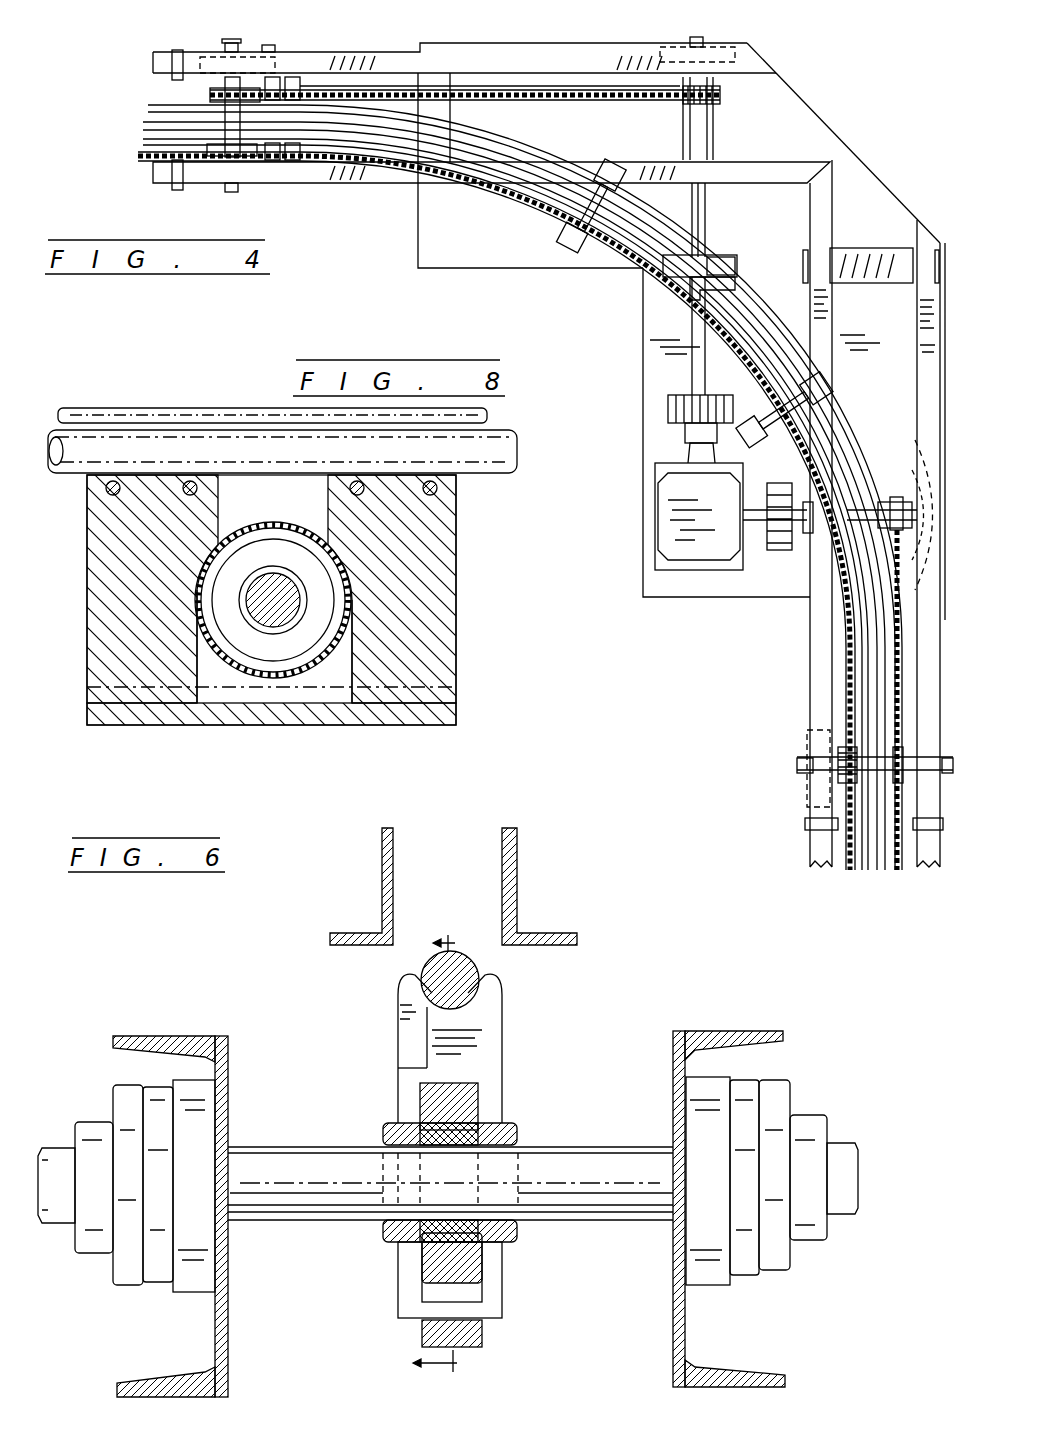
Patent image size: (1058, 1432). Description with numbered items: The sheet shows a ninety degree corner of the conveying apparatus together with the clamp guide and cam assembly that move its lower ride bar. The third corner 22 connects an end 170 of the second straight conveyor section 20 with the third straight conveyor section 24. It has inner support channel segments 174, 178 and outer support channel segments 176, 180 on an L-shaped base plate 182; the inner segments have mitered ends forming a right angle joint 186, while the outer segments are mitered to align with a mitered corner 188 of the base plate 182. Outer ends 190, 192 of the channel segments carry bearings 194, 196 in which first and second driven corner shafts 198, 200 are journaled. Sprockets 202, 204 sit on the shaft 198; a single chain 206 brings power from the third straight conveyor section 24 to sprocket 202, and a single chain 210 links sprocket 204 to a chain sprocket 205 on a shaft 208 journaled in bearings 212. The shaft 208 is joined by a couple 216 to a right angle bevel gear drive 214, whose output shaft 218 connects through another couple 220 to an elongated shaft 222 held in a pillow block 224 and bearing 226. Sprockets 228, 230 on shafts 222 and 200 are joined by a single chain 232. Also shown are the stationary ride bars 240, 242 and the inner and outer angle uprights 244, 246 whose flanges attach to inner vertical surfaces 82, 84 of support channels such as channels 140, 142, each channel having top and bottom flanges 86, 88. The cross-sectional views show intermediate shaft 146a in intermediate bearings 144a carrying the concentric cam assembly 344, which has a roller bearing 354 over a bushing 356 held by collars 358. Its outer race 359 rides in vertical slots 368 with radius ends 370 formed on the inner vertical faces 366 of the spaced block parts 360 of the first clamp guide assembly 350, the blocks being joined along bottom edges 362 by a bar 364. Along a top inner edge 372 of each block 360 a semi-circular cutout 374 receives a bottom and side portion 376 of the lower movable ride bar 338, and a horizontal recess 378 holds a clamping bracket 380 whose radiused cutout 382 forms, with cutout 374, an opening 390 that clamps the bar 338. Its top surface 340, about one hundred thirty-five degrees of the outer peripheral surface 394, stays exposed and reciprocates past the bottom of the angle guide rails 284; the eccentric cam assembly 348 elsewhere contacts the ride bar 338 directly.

In FIG. 4, the second straight conveyor section 20 is at (930, 868).
In FIG. 4, the third corner 22 is at (915, 210).
In FIG. 4, the third straight conveyor section 24 is at (172, 52).
In FIG. 6, the inner vertical surface 82 is at (673, 1330).
In FIG. 6, the inner vertical surface 84 is at (232, 1380).
In FIG. 6, the top flange 86 is at (160, 1042).
In FIG. 6, the bottom flange 88 is at (178, 1390).
In FIG. 6, the inner support channel 140 is at (705, 1040).
In FIG. 6, the outer support channel 142 is at (200, 1040).
In FIG. 6, the intermediate bearing 144a is at (128, 1280).
In FIG. 8, the intermediate shaft 146a is at (276, 590).
In FIG. 6, the intermediate shaft 146a is at (618, 1222).
In FIG. 4, the end 170 is at (812, 842).
In FIG. 4, the inner support channel segment 174 is at (810, 692).
In FIG. 4, the outer support channel segment 176 is at (934, 696).
In FIG. 4, the inner support channel segment 178 is at (378, 184).
In FIG. 4, the outer support channel segment 180 is at (398, 62).
In FIG. 4, the L-shaped base plate 182 is at (444, 268).
In FIG. 4, the right angle joint 186 is at (826, 166).
In FIG. 4, the mitered corner 188 is at (780, 76).
In FIG. 4, the outer end 190 is at (940, 828).
In FIG. 4, the outer end 192 is at (200, 58).
In FIG. 4, the bearing 194 is at (938, 768).
In FIG. 4, the bearing 196 is at (268, 52).
In FIG. 4, the first driven corner shaft 198 is at (808, 756).
In FIG. 4, the second driven corner shaft 200 is at (228, 44).
In FIG. 4, the single chain sprocket 202 is at (838, 780).
In FIG. 4, the single chain sprocket 204 is at (906, 758).
In FIG. 4, the chain sprocket 205 is at (916, 480).
In FIG. 4, the single chain 206 is at (848, 870).
In FIG. 4, the shaft 208 is at (894, 497).
In FIG. 4, the single chain 210 is at (903, 590).
In FIG. 4, the bearing 212 is at (920, 470).
In FIG. 4, the right angle bevel gear drive 214 is at (668, 570).
In FIG. 4, the couple 216 is at (768, 490).
In FIG. 4, the output shaft 218 is at (685, 433).
In FIG. 4, the couple 220 is at (668, 410).
In FIG. 4, the elongated shaft 222 is at (706, 212).
In FIG. 4, the pillow block 224 is at (737, 258).
In FIG. 4, the bearing 226 is at (688, 40).
In FIG. 4, the single chain sprocket 228 is at (722, 95).
In FIG. 4, the single chain sprocket 230 is at (212, 92).
In FIG. 4, the single chain 232 is at (567, 90).
In FIG. 4, the ride bar 240 is at (145, 143).
In FIG. 4, the ride bar 242 is at (150, 108).
In FIG. 4, the inner angle upright 244 is at (293, 162).
In FIG. 4, the outer angle upright 246 is at (295, 78).
In FIG. 6, the angle guide rail 284 is at (510, 828).
In FIG. 4, the lower movable ride bar 338 is at (145, 127).
In FIG. 8, the lower movable ride bar 338 is at (508, 472).
In FIG. 6, the lower movable ride bar 338 is at (428, 960).
In FIG. 6, the top surface 340 is at (468, 960).
In FIG. 8, the concentric cam assembly 344 is at (275, 715).
In FIG. 6, the concentric cam assembly 344 is at (480, 1115).
In FIG. 4, the eccentric cam assembly 348 is at (738, 292).
In FIG. 8, the first clamp guide assembly 350 is at (460, 612).
In FIG. 6, the first clamp guide assembly 350 is at (508, 1068).
In FIG. 8, the roller bearing 354 is at (340, 596).
In FIG. 6, the roller bearing 354 is at (500, 1130).
In FIG. 6, the bushing 356 is at (425, 1252).
In FIG. 6, the collar 358 is at (385, 1238).
In FIG. 8, the outer race 359 is at (308, 712).
In FIG. 8, the block part 360 is at (115, 655).
In FIG. 6, the block part 360 is at (398, 1105).
In FIG. 8, the bottom edge 362 is at (155, 712).
In FIG. 6, the bottom edge 362 is at (498, 1318).
In FIG. 8, the bar 364 is at (350, 720).
In FIG. 6, the bar 364 is at (425, 1338).
In FIG. 8, the inner vertical face 366 is at (318, 488).
In FIG. 8, the vertical slot 368 is at (340, 672).
In FIG. 6, the vertical slot 368 is at (470, 1290).
In FIG. 8, the radius end 370 is at (200, 570).
In FIG. 6, the top inner edge 372 is at (498, 940).
In FIG. 6, the semi-circular cutout 374 is at (478, 990).
In FIG. 6, the bottom and side portion 376 is at (496, 978).
In FIG. 6, the horizontal recess 378 is at (425, 1060).
In FIG. 6, the clamping bracket 380 is at (398, 1008).
In FIG. 6, the radiused cutout 382 is at (404, 978).
In FIG. 6, the opening 390 is at (466, 1000).
In FIG. 6, the outer peripheral surface 394 is at (425, 1020).